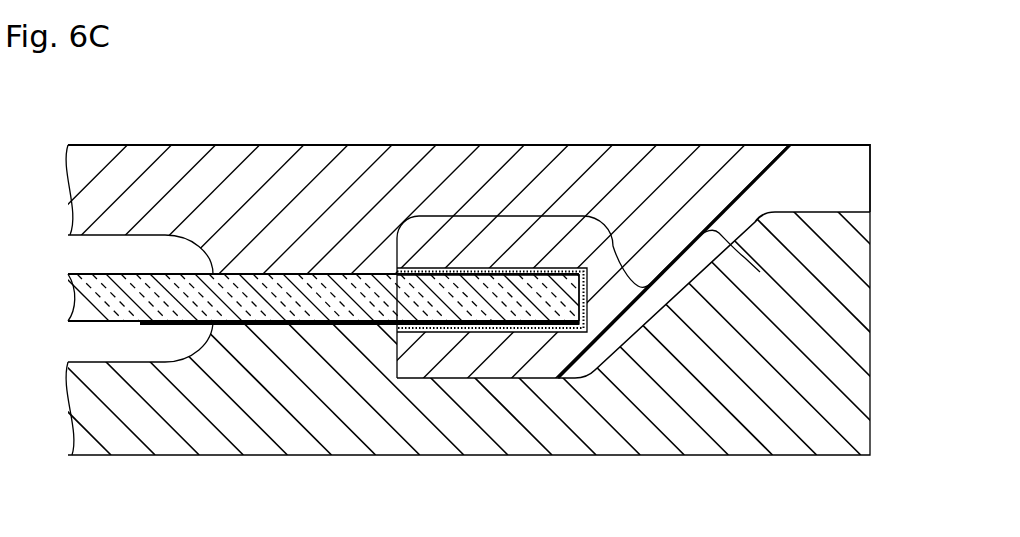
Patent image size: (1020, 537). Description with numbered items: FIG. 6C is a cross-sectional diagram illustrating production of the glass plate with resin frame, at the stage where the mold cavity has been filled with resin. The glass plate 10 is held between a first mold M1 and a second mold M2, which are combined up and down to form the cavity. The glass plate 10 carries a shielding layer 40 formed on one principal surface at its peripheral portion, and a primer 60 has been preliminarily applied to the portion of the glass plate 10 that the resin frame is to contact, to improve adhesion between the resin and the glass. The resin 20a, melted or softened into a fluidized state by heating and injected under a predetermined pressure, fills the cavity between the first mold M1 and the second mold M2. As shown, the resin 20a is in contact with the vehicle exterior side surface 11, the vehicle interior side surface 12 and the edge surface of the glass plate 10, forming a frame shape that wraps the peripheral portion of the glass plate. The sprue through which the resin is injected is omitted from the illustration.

The glass plate 10 is at (90, 297).
The vehicle exterior side surface 11 is at (138, 274).
The vehicle interior side surface 12 is at (110, 323).
The shielding layer 40 is at (262, 326).
The primer 60 is at (470, 270).
The resin 20a is at (556, 353).
The first mold M1 is at (852, 178).
The second mold M2 is at (852, 333).